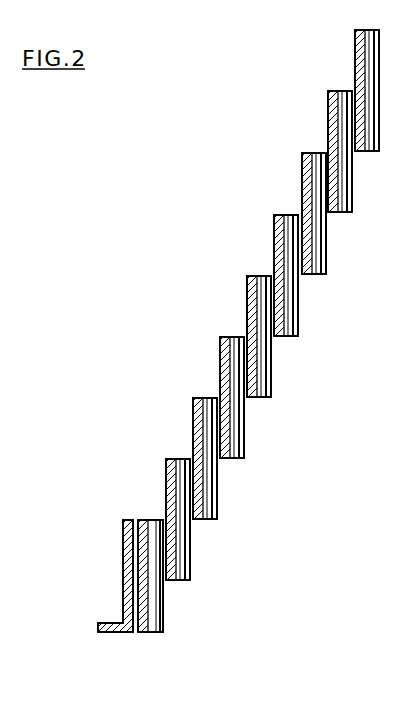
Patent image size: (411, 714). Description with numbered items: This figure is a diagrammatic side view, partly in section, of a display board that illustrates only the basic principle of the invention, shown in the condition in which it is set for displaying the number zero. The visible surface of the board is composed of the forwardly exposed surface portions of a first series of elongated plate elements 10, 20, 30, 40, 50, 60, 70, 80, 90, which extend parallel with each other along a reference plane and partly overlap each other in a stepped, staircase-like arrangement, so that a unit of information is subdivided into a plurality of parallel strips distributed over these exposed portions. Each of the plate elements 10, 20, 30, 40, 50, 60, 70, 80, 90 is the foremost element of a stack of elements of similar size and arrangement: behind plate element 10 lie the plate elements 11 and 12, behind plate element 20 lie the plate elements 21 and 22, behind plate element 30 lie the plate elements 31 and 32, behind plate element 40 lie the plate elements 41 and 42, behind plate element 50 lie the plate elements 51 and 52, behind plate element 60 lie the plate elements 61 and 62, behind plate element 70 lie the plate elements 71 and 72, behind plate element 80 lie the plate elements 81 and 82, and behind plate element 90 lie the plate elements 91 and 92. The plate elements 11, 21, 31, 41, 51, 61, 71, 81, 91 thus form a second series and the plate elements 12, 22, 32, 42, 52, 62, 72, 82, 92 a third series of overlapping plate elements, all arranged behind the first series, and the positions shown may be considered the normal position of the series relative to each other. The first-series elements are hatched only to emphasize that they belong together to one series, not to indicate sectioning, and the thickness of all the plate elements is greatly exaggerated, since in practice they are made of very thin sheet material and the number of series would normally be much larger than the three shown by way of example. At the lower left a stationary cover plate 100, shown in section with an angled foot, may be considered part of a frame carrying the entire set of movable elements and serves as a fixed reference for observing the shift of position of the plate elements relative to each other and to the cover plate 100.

The stationary cover plate 100 is at (127, 591).
The plate element 10 is at (126, 560).
The plate element 11 is at (147, 522).
The plate element 12 is at (158, 522).
The plate element 20 is at (181, 530).
The plate element 21 is at (179, 577).
The plate element 22 is at (190, 578).
The plate element 30 is at (205, 477).
The plate element 31 is at (206, 516).
The plate element 32 is at (217, 517).
The plate element 40 is at (232, 416).
The plate element 41 is at (233, 455).
The plate element 42 is at (244, 456).
The plate element 50 is at (259, 355).
The plate element 51 is at (260, 394).
The plate element 52 is at (271, 395).
The plate element 60 is at (286, 294).
The plate element 61 is at (287, 333).
The plate element 62 is at (298, 334).
The plate element 70 is at (314, 233).
The plate element 71 is at (315, 271).
The plate element 72 is at (326, 272).
The plate element 80 is at (340, 171).
The plate element 81 is at (341, 209).
The plate element 82 is at (352, 210).
The plate element 90 is at (362, 110).
The plate element 91 is at (368, 148).
The plate element 92 is at (379, 149).